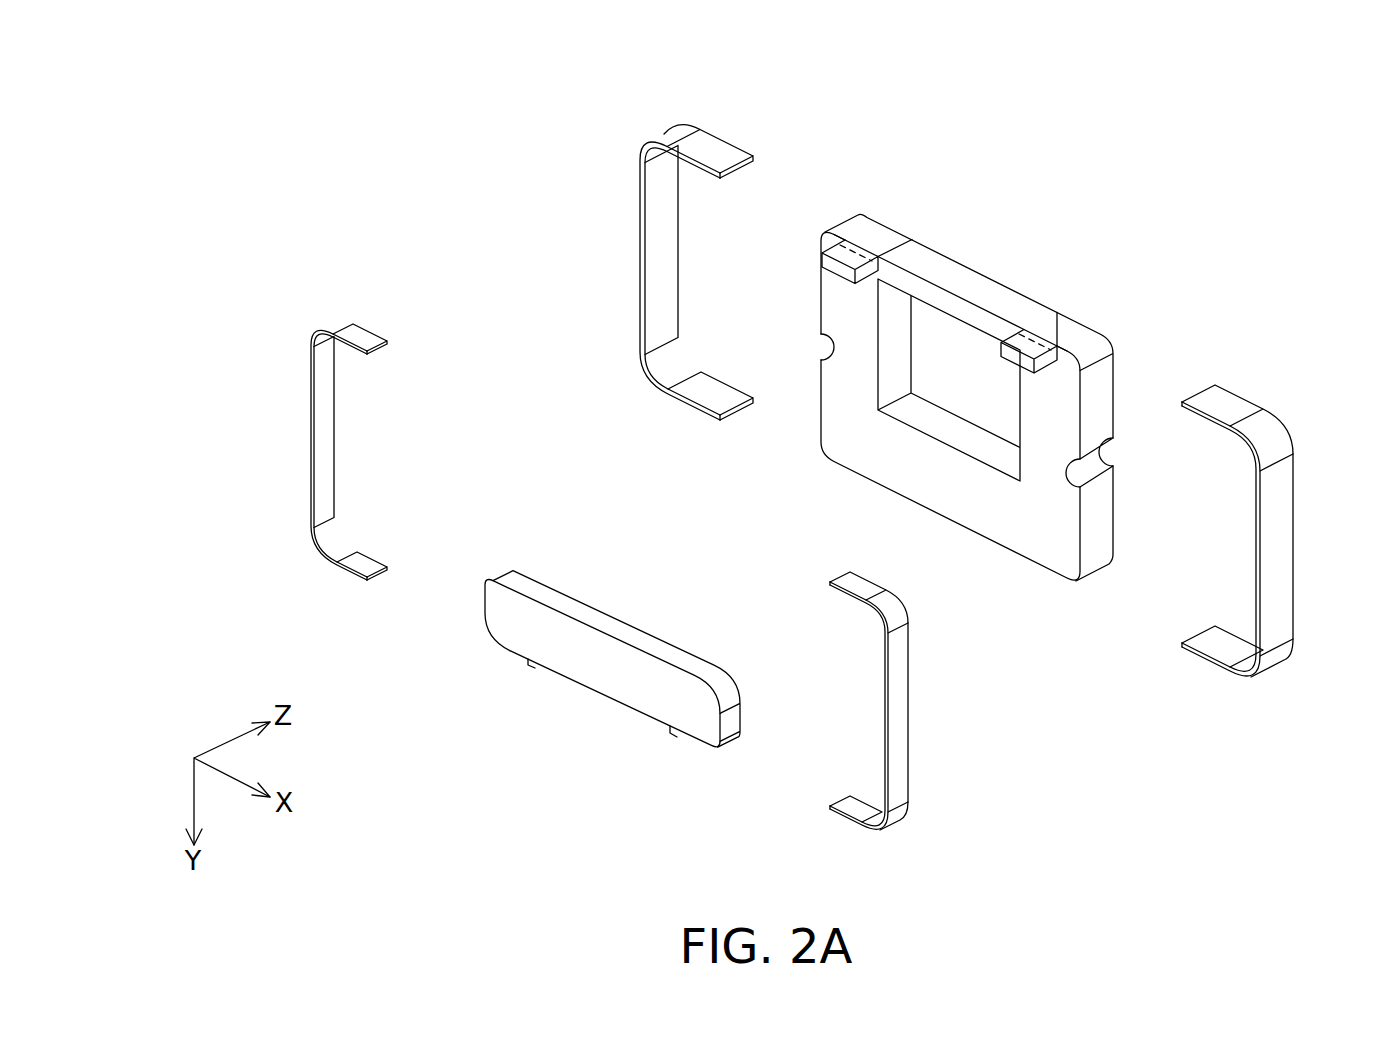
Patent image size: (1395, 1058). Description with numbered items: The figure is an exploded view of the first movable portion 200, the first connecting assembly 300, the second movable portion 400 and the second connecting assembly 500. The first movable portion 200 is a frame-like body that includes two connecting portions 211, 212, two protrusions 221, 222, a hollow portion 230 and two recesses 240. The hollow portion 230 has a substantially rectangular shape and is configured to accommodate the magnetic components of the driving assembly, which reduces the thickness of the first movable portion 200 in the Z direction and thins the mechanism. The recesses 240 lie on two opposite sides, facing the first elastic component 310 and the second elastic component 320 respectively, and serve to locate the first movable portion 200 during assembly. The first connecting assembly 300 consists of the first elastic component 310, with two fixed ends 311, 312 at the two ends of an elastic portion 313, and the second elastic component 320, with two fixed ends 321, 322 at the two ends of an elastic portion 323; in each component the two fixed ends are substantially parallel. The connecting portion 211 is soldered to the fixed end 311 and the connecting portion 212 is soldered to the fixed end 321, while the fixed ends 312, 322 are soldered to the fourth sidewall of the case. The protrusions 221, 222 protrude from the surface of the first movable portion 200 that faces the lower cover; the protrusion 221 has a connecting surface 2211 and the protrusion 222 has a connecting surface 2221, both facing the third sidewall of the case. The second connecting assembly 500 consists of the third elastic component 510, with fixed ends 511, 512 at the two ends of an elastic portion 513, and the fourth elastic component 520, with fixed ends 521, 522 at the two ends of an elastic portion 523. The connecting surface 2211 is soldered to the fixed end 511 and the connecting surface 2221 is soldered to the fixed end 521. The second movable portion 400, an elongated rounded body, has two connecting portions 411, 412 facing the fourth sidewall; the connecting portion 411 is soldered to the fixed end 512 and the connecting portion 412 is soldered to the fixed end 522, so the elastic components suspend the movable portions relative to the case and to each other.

The first movable portion 200 is at (942, 218).
The connecting portion 211 is at (1070, 340).
The connecting portion 212 is at (877, 233).
The protrusion 221 is at (1017, 362).
The protrusion 222 is at (832, 266).
The connecting surface 2211 is at (1029, 345).
The connecting surface 2221 is at (843, 253).
The hollow portion 230 is at (910, 410).
The recess 240 is at (823, 362).
The first connecting assembly 300 is at (132, 45).
The first elastic component 310 is at (1346, 404).
The fixed end 311 is at (1210, 425).
The fixed end 312 is at (1207, 667).
The elastic portion 313 is at (1280, 556).
The second elastic component 320 is at (602, 140).
The fixed end 321 is at (703, 180).
The fixed end 322 is at (692, 407).
The elastic portion 323 is at (640, 260).
The second movable portion 400 is at (609, 736).
The connecting portion 411 is at (690, 742).
The connecting portion 412 is at (518, 654).
The second connecting assembly 500 is at (132, 145).
The third elastic component 510 is at (961, 627).
The fixed end 511 is at (847, 595).
The fixed end 512 is at (848, 824).
The elastic portion 513 is at (897, 718).
The fourth elastic component 520 is at (278, 319).
The fixed end 521 is at (360, 356).
The fixed end 522 is at (352, 576).
The elastic portion 523 is at (311, 437).